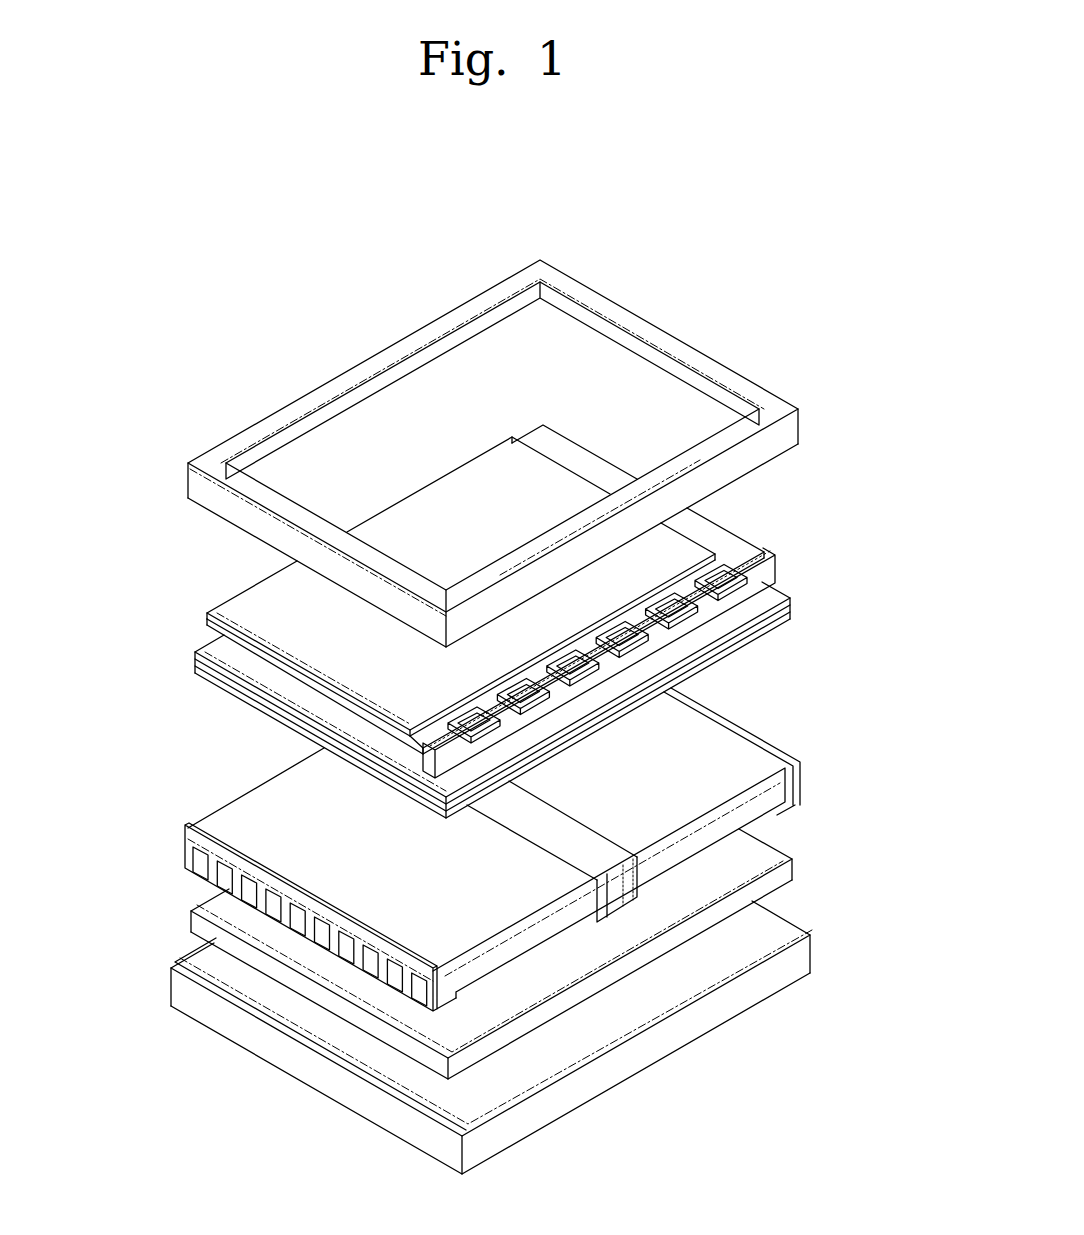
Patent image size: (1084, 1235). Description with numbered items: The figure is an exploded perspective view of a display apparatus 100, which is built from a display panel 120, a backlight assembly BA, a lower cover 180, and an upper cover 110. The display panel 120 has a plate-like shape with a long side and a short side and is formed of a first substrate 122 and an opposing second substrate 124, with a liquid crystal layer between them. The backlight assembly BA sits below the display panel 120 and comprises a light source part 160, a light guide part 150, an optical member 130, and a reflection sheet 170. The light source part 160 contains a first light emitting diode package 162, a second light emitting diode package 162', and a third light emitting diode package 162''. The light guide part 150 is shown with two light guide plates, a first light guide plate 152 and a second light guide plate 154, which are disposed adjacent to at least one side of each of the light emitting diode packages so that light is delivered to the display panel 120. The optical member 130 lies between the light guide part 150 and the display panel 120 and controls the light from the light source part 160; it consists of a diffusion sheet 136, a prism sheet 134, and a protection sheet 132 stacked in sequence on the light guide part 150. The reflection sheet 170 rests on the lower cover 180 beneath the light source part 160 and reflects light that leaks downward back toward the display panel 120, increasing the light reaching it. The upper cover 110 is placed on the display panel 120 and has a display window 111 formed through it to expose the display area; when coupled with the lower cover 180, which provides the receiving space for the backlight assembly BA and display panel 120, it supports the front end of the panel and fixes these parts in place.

The display apparatus 100 is at (724, 303).
The upper cover 110 is at (214, 447).
The display window 111 is at (418, 399).
The display panel 120 is at (560, 601).
The first substrate 122 is at (688, 548).
The second substrate 124 is at (730, 542).
The optical member 130 is at (451, 700).
The protection sheet 132 is at (200, 654).
The prism sheet 134 is at (200, 661).
The diffusion sheet 136 is at (200, 668).
The light guide part 150 is at (490, 974).
The first light guide plate 152 is at (531, 938).
The second light guide plate 154 is at (681, 851).
The light source part 160 is at (563, 839).
The first light emitting diode package 162 is at (533, 830).
The second light emitting diode package 162' is at (534, 851).
The third light emitting diode package 162'' is at (776, 751).
The reflection sheet 170 is at (200, 902).
The lower cover 180 is at (200, 948).
The backlight assembly BA is at (108, 684).